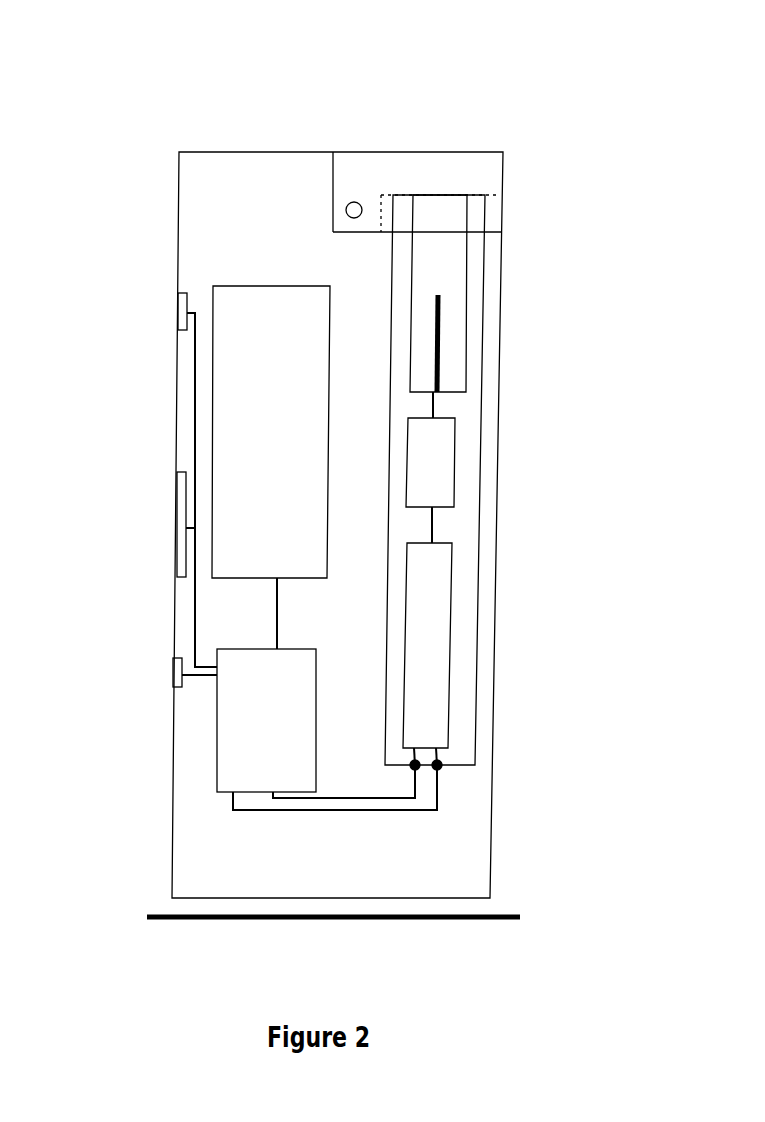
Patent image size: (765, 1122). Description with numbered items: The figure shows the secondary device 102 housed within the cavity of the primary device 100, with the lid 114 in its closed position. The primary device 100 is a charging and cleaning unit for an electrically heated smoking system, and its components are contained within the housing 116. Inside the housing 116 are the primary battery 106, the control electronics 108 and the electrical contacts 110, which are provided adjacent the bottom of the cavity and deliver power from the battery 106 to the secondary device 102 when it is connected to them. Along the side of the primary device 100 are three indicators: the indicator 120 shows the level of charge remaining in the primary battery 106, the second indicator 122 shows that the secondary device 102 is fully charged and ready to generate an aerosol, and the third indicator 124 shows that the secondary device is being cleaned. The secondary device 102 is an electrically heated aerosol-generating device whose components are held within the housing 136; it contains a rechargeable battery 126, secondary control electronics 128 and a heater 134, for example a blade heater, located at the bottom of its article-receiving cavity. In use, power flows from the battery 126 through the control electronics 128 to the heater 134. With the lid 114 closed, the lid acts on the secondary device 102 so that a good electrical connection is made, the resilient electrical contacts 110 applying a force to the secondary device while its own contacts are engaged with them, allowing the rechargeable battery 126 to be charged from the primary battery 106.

The primary device 100 is at (230, 137).
The secondary device 102 is at (472, 282).
The primary battery 106 is at (222, 406).
The control electronics 108 is at (221, 726).
The electrical contacts 110 is at (437, 766).
The lid 114 is at (366, 163).
The housing 116 is at (178, 853).
The indicator 120 is at (174, 530).
The second indicator 122 is at (174, 673).
The third indicator 124 is at (173, 320).
The rechargeable battery 126 is at (433, 672).
The secondary control electronics 128 is at (436, 477).
The heater 134 is at (432, 367).
The housing 136 is at (451, 320).